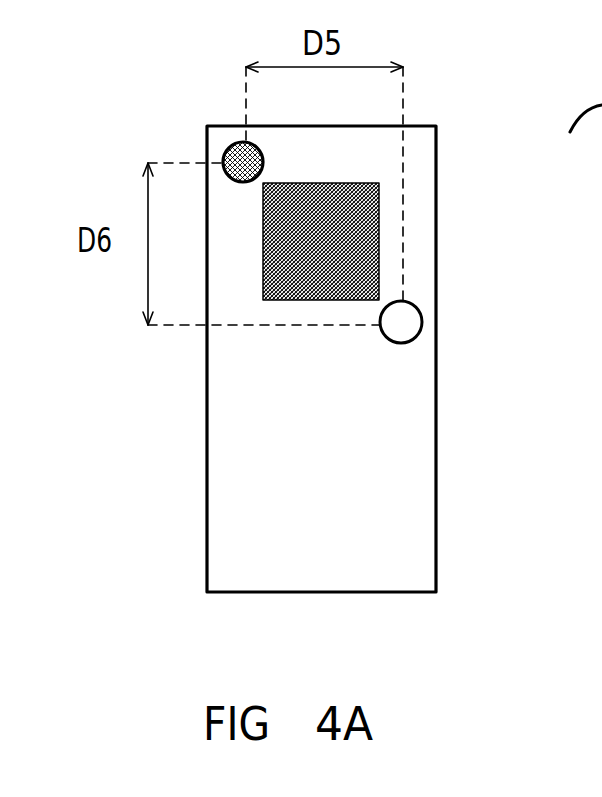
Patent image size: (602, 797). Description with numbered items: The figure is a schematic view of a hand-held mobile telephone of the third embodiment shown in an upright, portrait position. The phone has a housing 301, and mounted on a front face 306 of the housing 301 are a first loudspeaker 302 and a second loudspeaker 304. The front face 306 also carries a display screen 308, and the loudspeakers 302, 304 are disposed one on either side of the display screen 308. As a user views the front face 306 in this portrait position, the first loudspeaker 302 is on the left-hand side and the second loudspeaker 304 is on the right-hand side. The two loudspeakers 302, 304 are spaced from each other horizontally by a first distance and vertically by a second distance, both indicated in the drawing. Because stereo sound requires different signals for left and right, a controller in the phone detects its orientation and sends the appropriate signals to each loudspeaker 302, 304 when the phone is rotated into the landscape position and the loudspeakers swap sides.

The housing 301 is at (437, 566).
The first loudspeaker 302 is at (229, 145).
The second loudspeaker 304 is at (423, 322).
The front face 306 is at (255, 482).
The display screen 308 is at (358, 242).